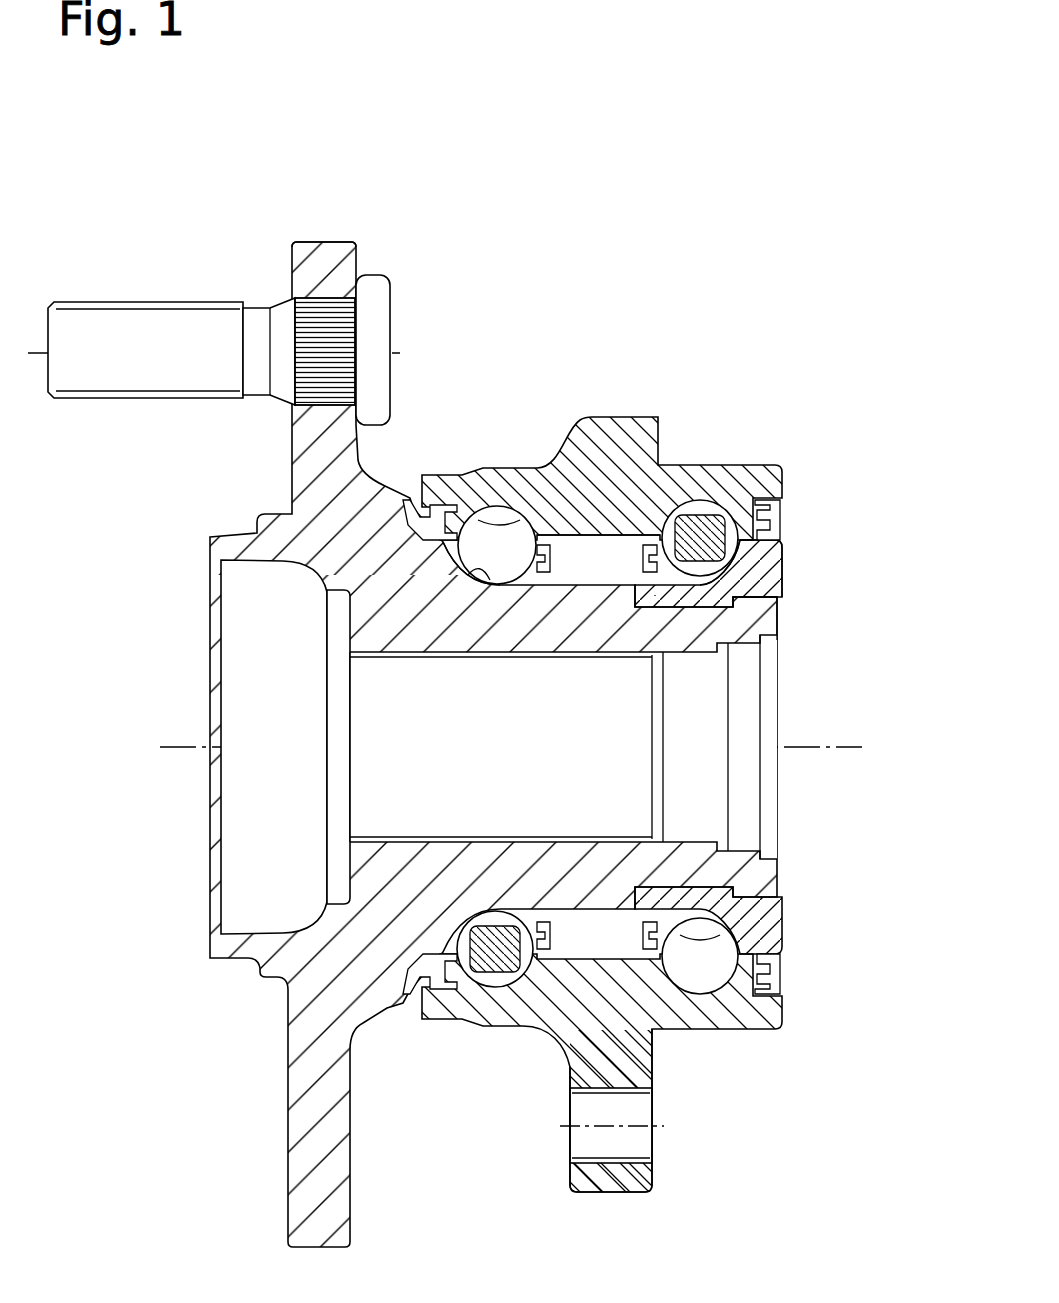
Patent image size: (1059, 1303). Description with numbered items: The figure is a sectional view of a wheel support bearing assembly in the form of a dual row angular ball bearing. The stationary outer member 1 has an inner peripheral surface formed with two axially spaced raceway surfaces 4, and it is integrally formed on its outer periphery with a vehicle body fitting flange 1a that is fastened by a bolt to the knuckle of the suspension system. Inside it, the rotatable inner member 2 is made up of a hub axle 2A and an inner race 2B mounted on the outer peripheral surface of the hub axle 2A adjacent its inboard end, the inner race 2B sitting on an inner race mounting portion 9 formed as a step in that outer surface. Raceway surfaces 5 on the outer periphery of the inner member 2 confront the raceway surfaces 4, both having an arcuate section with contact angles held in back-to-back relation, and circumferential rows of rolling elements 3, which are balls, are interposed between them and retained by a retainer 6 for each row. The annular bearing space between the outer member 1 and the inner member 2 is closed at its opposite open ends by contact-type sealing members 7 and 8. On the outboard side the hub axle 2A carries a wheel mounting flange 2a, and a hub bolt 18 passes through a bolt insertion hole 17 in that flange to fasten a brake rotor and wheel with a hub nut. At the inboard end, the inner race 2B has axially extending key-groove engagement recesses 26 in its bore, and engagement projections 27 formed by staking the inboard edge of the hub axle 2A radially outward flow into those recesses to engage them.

The outer member 1 is at (548, 457).
The vehicle body fitting flange 1a is at (613, 1192).
The inner member 2 is at (427, 748).
The hub axle 2A is at (325, 563).
The inner race 2B is at (655, 595).
The wheel mounting flange 2a is at (319, 243).
The rolling elements 3 is at (490, 527).
The raceway surfaces 4 is at (508, 513).
The raceway surfaces 5 is at (457, 563).
The retainer 6 is at (623, 533).
The sealing member 7 is at (412, 499).
The sealing member 8 is at (785, 508).
The inner race mounting portion 9 is at (702, 613).
The bolt insertion hole 17 is at (297, 318).
The hub bolt 18 is at (175, 302).
The engagement recesses 26 is at (733, 640).
The engagement projections 27 is at (783, 585).